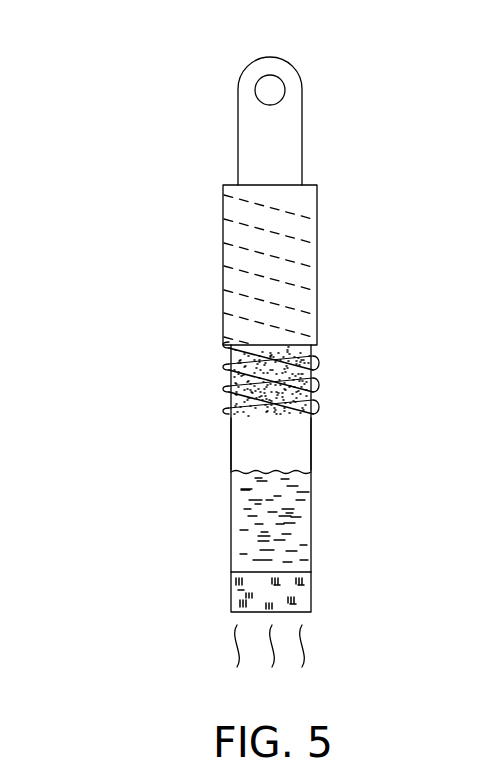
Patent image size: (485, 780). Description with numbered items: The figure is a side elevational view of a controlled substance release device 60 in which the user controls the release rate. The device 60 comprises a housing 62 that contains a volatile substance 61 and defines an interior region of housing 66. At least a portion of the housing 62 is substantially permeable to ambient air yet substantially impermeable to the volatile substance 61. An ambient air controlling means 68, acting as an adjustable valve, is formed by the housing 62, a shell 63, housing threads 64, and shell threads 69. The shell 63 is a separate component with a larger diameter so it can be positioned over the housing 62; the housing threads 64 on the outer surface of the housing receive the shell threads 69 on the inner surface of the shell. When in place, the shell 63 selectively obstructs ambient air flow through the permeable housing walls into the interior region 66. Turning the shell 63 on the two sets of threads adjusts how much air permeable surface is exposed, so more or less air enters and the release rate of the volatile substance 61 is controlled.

The controlled substance release device 60 is at (222, 343).
The volatile substance 61 is at (247, 523).
The housing 62 is at (310, 457).
The shell 63 is at (276, 265).
The housing threads 64 is at (297, 383).
The interior region of housing 66 is at (245, 435).
The ambient air controlling means 68 is at (160, 382).
The shell threads 69 is at (232, 281).